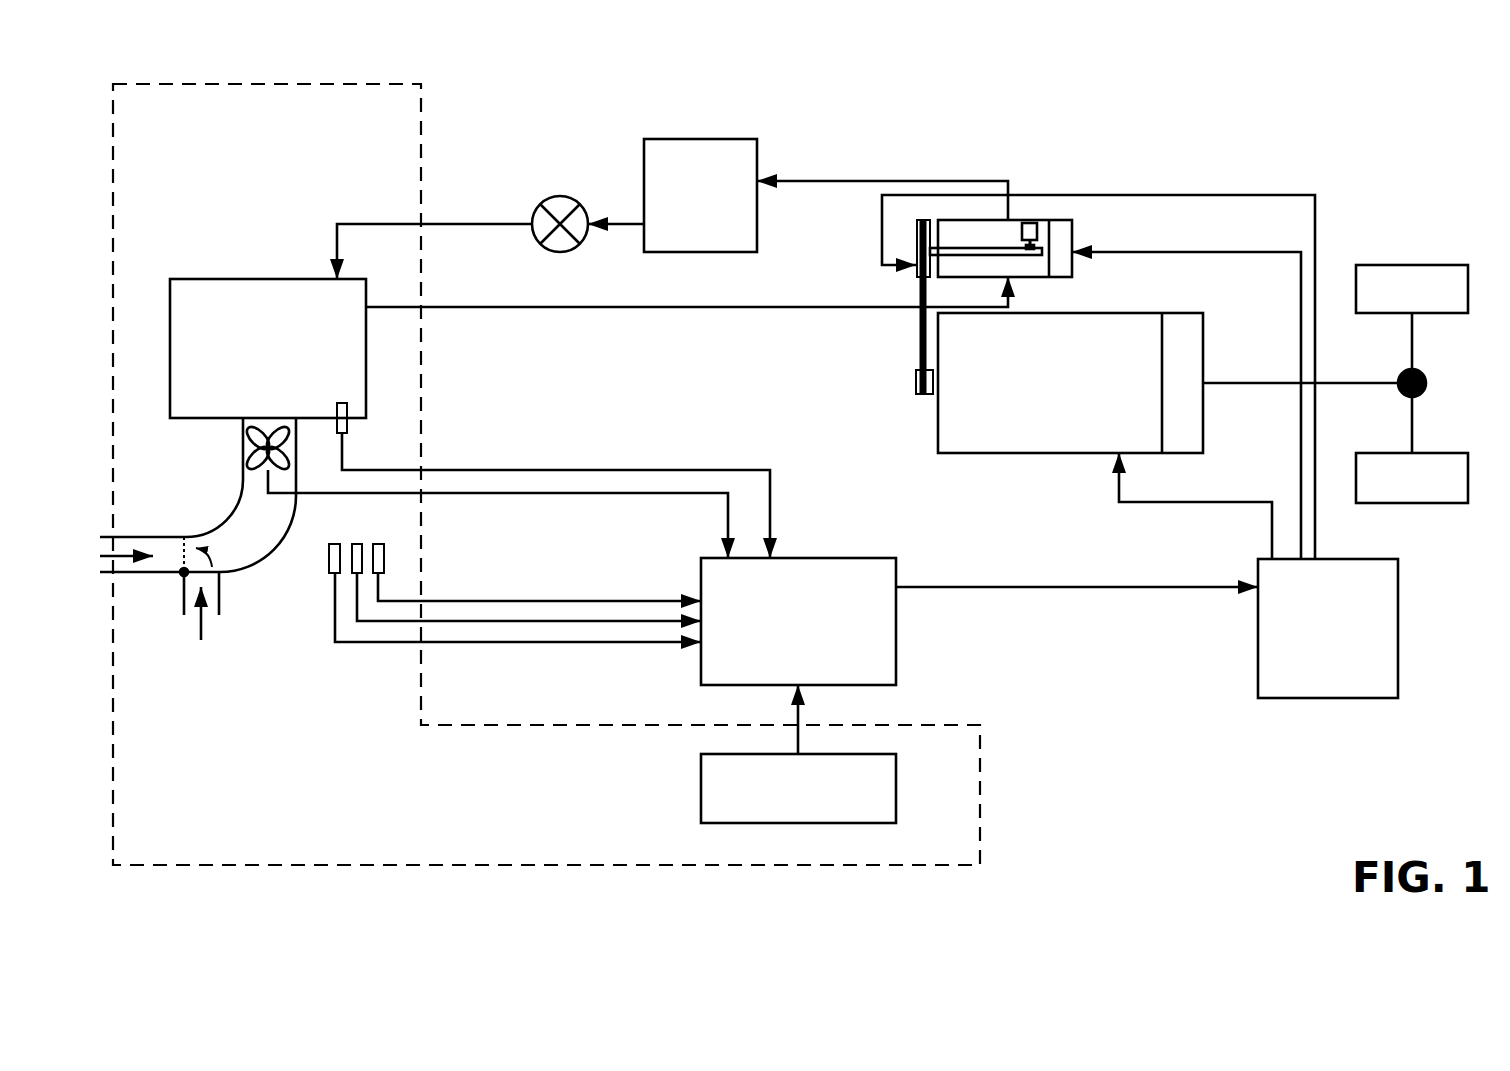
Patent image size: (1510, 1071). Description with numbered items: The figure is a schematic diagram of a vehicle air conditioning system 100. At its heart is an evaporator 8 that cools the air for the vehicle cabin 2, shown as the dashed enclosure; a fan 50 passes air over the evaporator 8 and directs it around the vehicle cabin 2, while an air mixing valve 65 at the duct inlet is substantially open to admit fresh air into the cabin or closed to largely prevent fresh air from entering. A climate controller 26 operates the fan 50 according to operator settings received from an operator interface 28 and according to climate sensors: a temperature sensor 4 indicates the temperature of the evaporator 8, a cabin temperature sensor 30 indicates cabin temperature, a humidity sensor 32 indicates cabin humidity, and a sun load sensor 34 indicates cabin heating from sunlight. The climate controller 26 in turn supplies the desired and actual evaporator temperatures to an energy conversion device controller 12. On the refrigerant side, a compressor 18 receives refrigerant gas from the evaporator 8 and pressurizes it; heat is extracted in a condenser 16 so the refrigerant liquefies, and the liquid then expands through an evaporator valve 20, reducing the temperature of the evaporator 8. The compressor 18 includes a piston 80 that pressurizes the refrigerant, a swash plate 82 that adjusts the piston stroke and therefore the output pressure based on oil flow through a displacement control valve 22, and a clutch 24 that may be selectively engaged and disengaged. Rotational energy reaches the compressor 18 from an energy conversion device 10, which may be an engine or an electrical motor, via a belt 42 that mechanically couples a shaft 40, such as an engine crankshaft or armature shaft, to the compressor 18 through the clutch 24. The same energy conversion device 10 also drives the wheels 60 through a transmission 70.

The air conditioning system 100 is at (1302, 63).
The vehicle cabin 2 is at (175, 865).
The evaporator 8 is at (170, 279).
The condenser 16 is at (644, 139).
The evaporator valve 20 is at (548, 246).
The displacement control valve 22 is at (1072, 220).
The compressor 18 is at (1025, 278).
The piston 80 is at (1028, 223).
The swash plate 82 is at (1033, 244).
The clutch 24 is at (915, 268).
The belt 42 is at (918, 322).
The shaft 40 is at (930, 395).
The energy conversion device 10 is at (938, 453).
The transmission 70 is at (1203, 313).
The wheels 60 is at (1412, 384).
The energy conversion device controller 12 is at (1398, 559).
The climate controller 26 is at (896, 685).
The operator interface 28 is at (896, 823).
The temperature sensor 4 is at (337, 430).
The fan 50 is at (247, 460).
The air mixing valve 65 is at (190, 578).
The cabin temperature sensor 30 is at (332, 544).
The sun load sensor 34 is at (355, 544).
The humidity sensor 32 is at (378, 544).